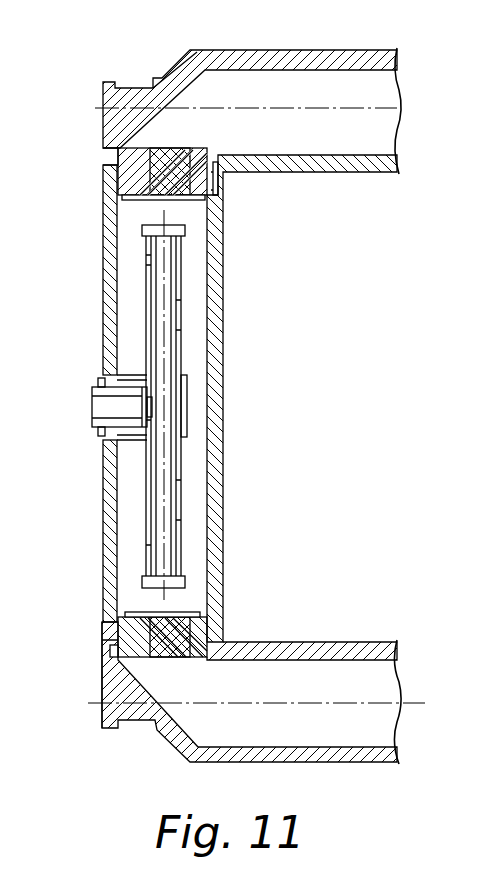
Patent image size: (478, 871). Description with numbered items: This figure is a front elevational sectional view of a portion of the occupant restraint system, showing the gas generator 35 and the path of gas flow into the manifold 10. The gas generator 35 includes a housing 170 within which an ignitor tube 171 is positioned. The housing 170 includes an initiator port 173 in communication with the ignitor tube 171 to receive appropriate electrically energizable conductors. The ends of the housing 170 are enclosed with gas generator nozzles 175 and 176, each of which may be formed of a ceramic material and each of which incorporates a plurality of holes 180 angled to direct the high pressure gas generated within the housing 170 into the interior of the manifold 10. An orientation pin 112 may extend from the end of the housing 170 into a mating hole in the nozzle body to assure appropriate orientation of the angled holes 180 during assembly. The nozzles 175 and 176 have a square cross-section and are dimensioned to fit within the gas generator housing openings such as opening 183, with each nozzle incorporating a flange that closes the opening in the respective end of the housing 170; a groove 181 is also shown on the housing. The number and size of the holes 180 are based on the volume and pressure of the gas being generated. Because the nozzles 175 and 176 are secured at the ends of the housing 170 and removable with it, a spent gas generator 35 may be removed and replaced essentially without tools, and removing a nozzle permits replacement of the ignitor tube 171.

The manifold 10 is at (282, 50).
The gas generator 35 is at (103, 573).
The orientation pin 112 is at (220, 178).
The housing 170 is at (105, 600).
The ignitor tube 171 is at (170, 520).
The initiator port 173 is at (105, 416).
The gas generator nozzle 175 is at (103, 178).
The gas generator nozzle 176 is at (230, 638).
The holes 180 is at (165, 202).
The groove 181 is at (106, 654).
The gas generator housing opening 183 is at (103, 156).